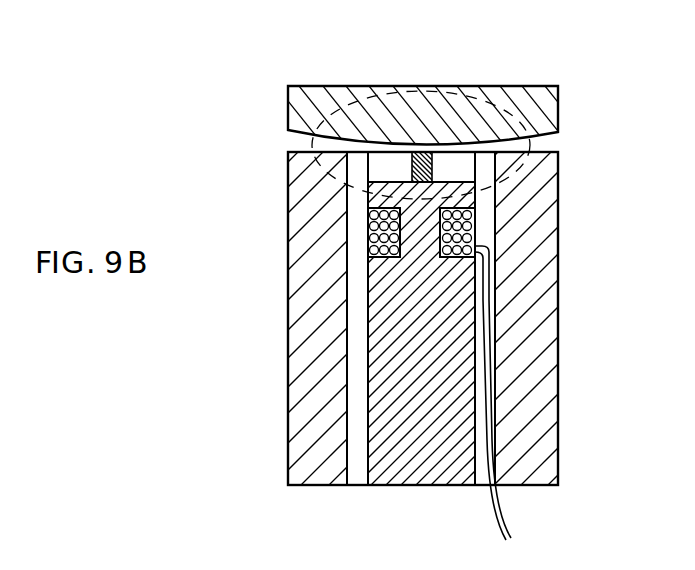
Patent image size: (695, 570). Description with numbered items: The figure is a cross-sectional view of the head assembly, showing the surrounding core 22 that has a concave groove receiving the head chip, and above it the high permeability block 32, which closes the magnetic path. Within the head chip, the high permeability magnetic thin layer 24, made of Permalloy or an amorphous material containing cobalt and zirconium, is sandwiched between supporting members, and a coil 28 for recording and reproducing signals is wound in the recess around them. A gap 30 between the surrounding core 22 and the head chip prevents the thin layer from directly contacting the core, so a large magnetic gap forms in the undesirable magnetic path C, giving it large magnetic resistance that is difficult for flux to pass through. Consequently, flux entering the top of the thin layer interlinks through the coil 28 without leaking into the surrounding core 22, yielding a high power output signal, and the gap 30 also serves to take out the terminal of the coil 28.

The surrounding core 22 is at (300, 200).
The high permeability magnetic thin layer 24 is at (418, 151).
The coil 28 is at (370, 242).
The gap 30 is at (484, 237).
The high permeability block 32 is at (498, 88).
The magnetic path C is at (558, 97).